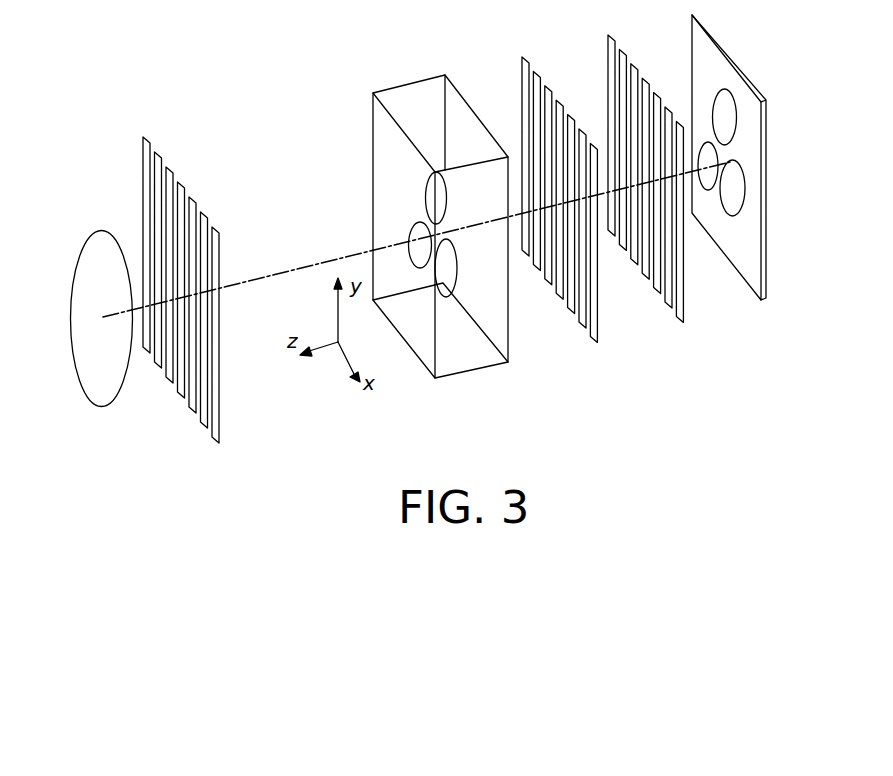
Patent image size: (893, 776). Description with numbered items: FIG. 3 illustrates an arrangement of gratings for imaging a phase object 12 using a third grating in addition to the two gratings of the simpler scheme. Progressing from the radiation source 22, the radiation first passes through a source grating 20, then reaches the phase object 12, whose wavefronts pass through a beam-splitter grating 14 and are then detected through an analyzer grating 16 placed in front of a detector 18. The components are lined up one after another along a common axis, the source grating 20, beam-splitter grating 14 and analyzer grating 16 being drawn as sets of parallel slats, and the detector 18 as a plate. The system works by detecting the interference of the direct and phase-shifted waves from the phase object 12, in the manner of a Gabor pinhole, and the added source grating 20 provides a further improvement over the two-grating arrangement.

The phase object 12 is at (428, 200).
The beam-splitter grating 14 is at (557, 102).
The analyzer grating 16 is at (642, 83).
The detector 18 is at (708, 63).
The source grating 20 is at (178, 186).
The radiation source 22 is at (103, 246).